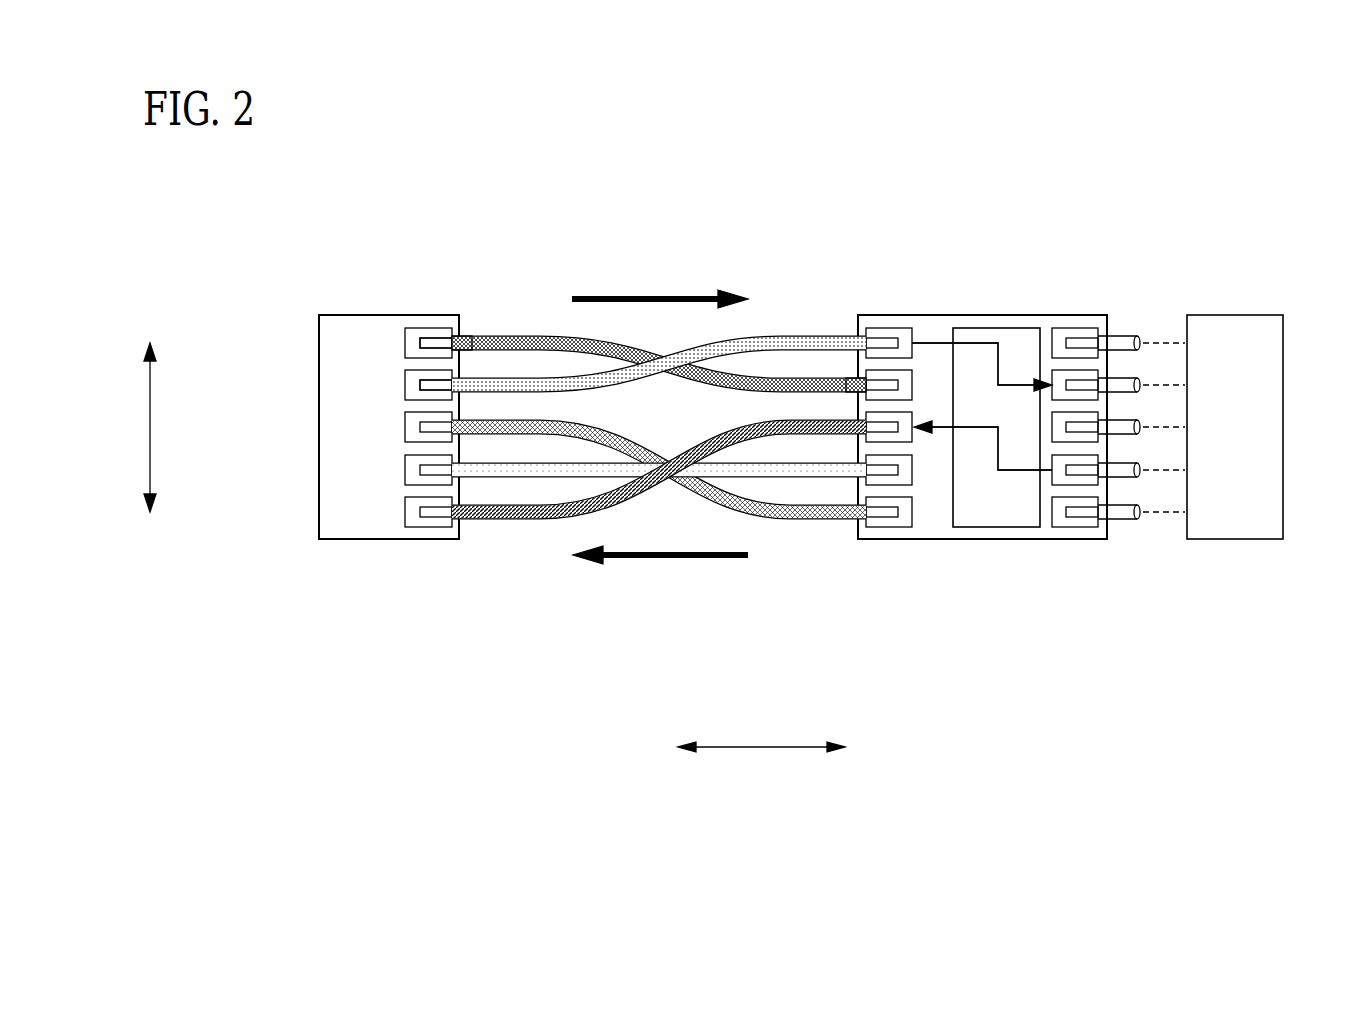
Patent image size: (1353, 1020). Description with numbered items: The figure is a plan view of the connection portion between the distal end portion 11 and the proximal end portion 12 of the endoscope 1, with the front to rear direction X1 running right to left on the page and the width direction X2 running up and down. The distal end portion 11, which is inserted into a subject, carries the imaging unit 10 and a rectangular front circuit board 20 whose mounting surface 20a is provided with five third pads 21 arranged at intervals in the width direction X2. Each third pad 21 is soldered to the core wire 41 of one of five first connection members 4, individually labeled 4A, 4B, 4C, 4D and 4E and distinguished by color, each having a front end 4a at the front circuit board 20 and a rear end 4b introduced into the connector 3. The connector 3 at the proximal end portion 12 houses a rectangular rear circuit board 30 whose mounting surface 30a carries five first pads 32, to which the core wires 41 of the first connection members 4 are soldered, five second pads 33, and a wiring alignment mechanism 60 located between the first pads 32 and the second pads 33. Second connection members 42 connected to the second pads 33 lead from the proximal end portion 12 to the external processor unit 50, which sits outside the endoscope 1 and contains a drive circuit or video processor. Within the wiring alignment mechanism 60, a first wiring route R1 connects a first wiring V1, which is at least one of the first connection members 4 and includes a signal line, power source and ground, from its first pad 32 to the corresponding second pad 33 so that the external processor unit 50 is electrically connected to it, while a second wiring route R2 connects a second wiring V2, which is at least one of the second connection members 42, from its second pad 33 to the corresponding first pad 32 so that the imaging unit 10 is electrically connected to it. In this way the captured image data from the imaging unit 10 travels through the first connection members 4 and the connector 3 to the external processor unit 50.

The endoscope 1 is at (962, 290).
The connector 3 is at (1057, 540).
The first connection member 4 is at (655, 434).
The first connection member 4A is at (535, 340).
The first connection member 4B is at (490, 385).
The first connection member 4C is at (482, 434).
The first connection member 4D is at (525, 478).
The first connection member 4E is at (550, 525).
The first end of cable 4a is at (470, 338).
The rear end 4b is at (832, 335).
The imaging unit 10 is at (317, 479).
The distal end portion 11 is at (340, 313).
The proximal end portion 12 is at (1036, 313).
The front circuit board 20 is at (366, 540).
The mounting surface 20a is at (357, 417).
The third pad 21 is at (405, 385).
The rear circuit board 30 is at (945, 540).
The mounting surface 30a is at (926, 518).
The first pad 32 is at (916, 380).
The second pad 33 is at (1080, 335).
The core wire 41 is at (431, 338).
The second connection member 42 is at (1125, 335).
The external processor unit 50 is at (1235, 314).
The wiring alignment mechanism 60 is at (978, 527).
The first wiring route R1 is at (982, 330).
The second wiring route R2 is at (1010, 482).
The first wiring V1 is at (660, 285).
The second wiring V2 is at (660, 571).
The front to rear direction X1 is at (761, 763).
The width direction X2 is at (135, 427).